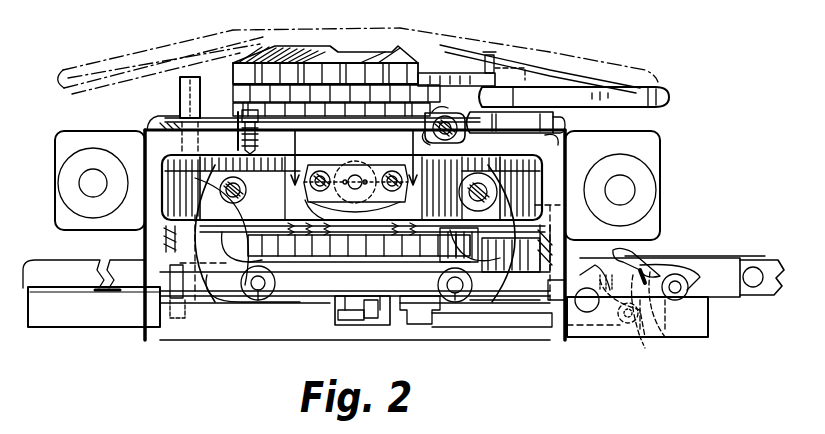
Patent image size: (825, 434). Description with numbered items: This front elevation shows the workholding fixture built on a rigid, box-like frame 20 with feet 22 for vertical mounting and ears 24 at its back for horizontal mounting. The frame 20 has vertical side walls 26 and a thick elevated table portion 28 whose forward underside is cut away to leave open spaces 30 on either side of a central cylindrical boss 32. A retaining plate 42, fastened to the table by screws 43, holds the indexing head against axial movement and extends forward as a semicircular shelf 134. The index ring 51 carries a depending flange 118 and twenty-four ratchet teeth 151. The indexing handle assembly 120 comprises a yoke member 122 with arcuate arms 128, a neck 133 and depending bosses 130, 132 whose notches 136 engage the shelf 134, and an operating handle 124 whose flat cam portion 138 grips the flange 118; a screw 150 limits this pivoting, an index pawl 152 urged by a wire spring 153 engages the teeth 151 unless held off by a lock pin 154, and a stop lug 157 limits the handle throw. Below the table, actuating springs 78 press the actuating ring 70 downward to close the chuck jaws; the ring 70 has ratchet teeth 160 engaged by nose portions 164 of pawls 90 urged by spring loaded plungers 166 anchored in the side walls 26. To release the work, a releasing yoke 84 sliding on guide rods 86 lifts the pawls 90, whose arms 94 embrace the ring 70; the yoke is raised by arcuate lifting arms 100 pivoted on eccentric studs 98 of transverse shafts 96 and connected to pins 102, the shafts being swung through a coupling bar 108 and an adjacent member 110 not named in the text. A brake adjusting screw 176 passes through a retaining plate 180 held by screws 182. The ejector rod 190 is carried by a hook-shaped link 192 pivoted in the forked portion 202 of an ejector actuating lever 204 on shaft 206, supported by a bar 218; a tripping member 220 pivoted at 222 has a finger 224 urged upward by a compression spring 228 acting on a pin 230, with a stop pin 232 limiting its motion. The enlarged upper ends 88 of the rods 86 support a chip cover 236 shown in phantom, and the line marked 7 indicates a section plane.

The frame 20 is at (146, 120).
The feet 22 is at (52, 315).
The ears 24 is at (62, 140).
The side walls 26 is at (130, 200).
The horizontal table portion 28 is at (128, 150).
The open spaces 30 is at (160, 175).
The cylindrical boss 32 is at (300, 160).
The retaining plate 42 is at (190, 116).
The screws 43 is at (240, 140).
The indexing ring 51 is at (278, 50).
The actuating ring 70 is at (410, 258).
The actuating springs 78 is at (355, 212).
The releasing yoke 84 is at (316, 296).
The guide rods 86 is at (178, 325).
The enlarged upper ends 88 is at (192, 78).
The thrust transmitting members 90 is at (232, 230).
The arms 94 is at (258, 264).
The shafts 96 is at (352, 187).
The eccentric stud 98 is at (238, 204).
The lifting arm 100 is at (215, 298).
The pins 102 is at (272, 300).
The coupling bar 108 is at (128, 292).
The plate 110 is at (772, 262).
The depending annular flange 118 is at (305, 92).
The indexing handle assembly 120 is at (504, 88).
The yoke member 122 is at (566, 128).
The operating handle 124 is at (670, 92).
The arcuate diverging arms 128 is at (410, 104).
The boss 130 is at (485, 135).
The boss 132 is at (545, 146).
The neck portion 133 is at (412, 130).
The shelf 134 is at (334, 116).
The notches 136 is at (433, 144).
The flat cam portion 138 is at (435, 96).
The screw 150 is at (432, 118).
The ratchet teeth 151 is at (340, 80).
The index pawl 152 is at (430, 78).
The wire spring 153 is at (462, 72).
The lock pin 154 is at (518, 66).
The stop lug 157 is at (242, 110).
The ratchet teeth 160 is at (310, 256).
The nose portion 164 is at (478, 244).
The spring loaded plungers 166 is at (186, 250).
The adjusting screw 176 is at (356, 182).
The retaining plate 180 is at (320, 212).
The screws 182 is at (380, 205).
The ejector rod 190 is at (340, 300).
The hook-shaped link 192 is at (370, 320).
The forked end portion 202 is at (352, 326).
The ejector actuating lever 204 is at (478, 322).
The shaft 206 is at (590, 325).
The bar 218 is at (412, 328).
The tripping member 220 is at (635, 270).
The pivot 222 is at (688, 272).
The finger portion 224 is at (650, 262).
The compression spring 228 is at (658, 338).
The pin 230 is at (650, 272).
The stop pin 232 is at (642, 350).
The cover 236 is at (95, 56).
The section line 7 is at (354, 157).